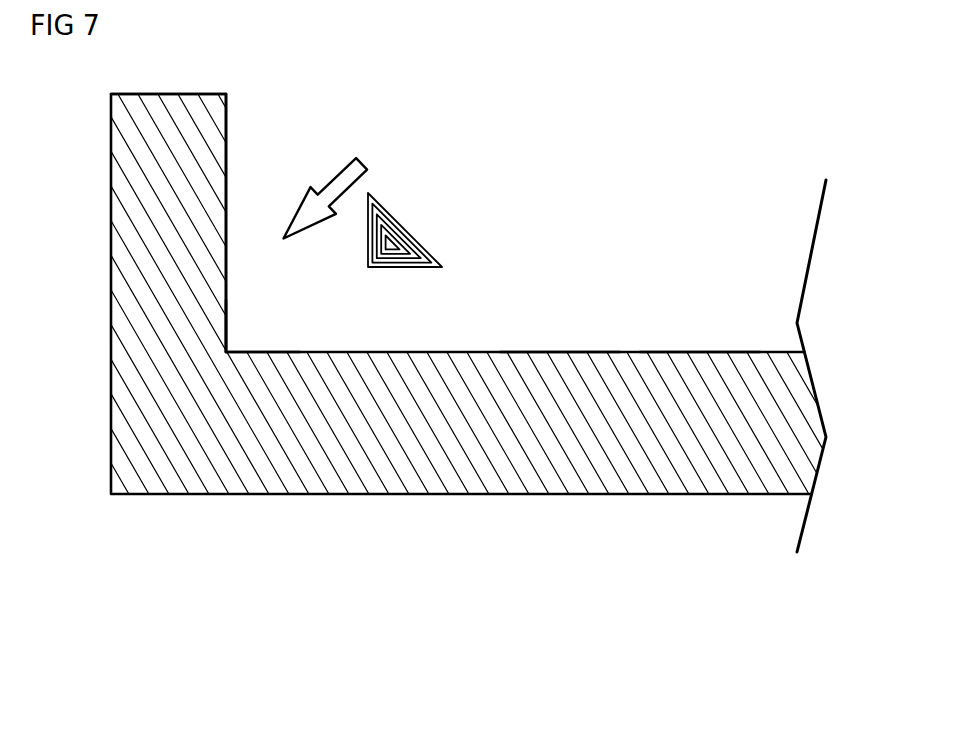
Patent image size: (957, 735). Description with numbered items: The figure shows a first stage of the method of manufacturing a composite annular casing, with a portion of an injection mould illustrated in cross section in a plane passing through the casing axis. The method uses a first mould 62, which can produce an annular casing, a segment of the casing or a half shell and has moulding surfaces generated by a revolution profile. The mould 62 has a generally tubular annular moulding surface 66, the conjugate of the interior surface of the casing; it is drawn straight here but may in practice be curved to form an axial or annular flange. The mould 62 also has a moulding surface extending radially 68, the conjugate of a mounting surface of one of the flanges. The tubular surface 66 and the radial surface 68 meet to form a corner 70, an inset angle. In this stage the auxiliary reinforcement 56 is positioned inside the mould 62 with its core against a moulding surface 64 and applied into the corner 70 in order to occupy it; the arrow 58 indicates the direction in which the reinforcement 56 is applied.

The auxiliary reinforcement 56 is at (443, 255).
The laser beam direction 58 is at (456, 151).
The first mould 62 is at (645, 164).
The moulding surface 64 is at (560, 351).
The tubular annular moulding surface 66 is at (692, 351).
The radially extending moulding surface 68 is at (227, 138).
The corner 70 is at (227, 349).